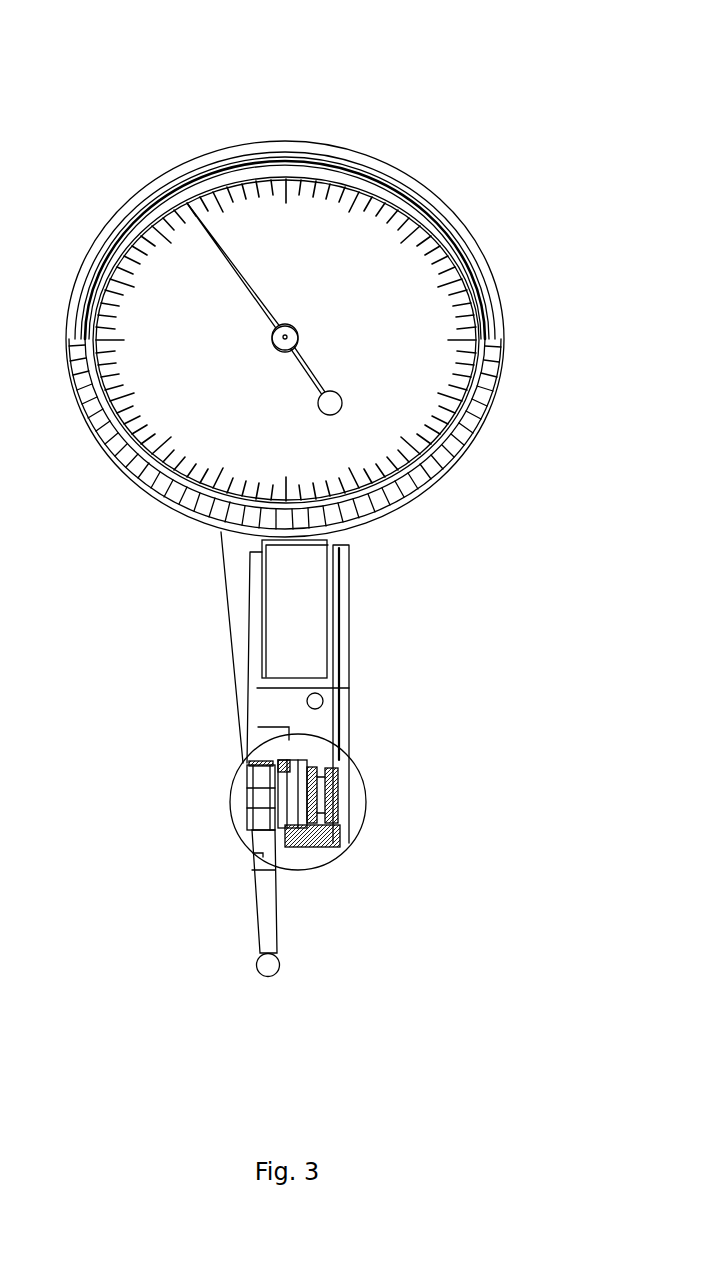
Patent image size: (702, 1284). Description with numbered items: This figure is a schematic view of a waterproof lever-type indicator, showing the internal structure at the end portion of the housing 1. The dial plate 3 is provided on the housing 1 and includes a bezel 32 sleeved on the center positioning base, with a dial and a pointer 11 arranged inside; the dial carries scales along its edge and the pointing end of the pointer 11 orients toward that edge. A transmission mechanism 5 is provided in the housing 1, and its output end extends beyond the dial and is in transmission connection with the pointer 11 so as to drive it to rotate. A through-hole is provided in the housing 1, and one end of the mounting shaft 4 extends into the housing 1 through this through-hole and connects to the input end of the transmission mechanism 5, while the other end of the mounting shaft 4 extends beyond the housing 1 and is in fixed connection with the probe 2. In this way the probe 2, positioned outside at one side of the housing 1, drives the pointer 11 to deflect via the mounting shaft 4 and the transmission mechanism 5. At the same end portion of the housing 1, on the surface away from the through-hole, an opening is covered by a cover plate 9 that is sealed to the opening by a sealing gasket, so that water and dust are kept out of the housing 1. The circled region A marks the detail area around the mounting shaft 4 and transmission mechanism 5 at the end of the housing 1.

The housing 1 is at (242, 615).
The probe 2 is at (267, 897).
The dial plate 3 is at (343, 266).
The mounting shaft 4 is at (251, 805).
The transmission mechanism 5 is at (338, 760).
The cover plate 9 is at (343, 615).
The pointer 11 is at (231, 254).
The bezel 32 is at (440, 226).
The detail view region A is at (363, 825).